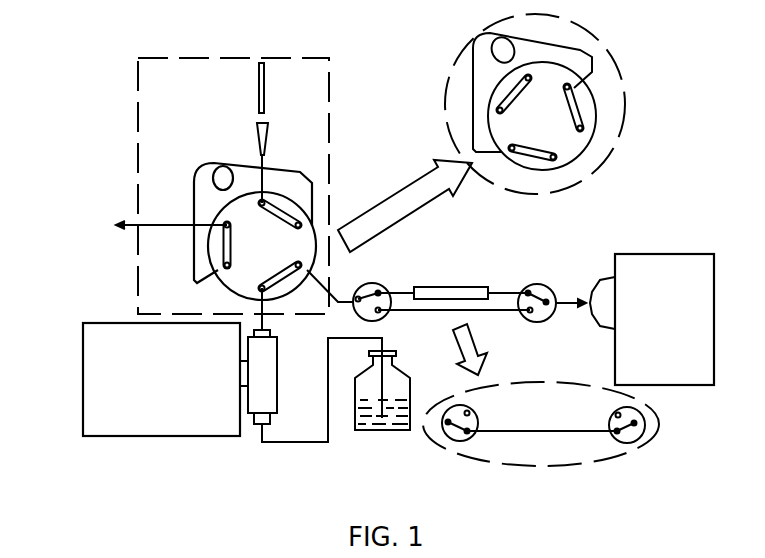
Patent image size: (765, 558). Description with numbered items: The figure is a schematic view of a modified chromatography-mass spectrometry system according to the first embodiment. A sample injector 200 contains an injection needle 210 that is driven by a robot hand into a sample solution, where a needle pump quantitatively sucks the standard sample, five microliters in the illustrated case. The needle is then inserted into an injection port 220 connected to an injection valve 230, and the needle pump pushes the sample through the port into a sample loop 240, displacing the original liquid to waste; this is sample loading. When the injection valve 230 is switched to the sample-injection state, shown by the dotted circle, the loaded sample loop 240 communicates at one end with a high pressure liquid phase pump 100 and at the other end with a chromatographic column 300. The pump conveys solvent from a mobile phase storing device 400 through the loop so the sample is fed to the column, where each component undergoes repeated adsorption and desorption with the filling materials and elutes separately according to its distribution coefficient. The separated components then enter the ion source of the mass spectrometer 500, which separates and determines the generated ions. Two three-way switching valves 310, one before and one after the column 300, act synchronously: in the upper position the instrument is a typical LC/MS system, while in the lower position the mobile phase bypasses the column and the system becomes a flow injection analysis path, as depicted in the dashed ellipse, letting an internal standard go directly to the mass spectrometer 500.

The high pressure liquid phase pump 100 is at (107, 377).
The sample injector 200 is at (147, 100).
The injection needle 210 is at (262, 80).
The injection port 220 is at (263, 140).
The injection valve 230 is at (312, 232).
The sample loop 240 is at (193, 182).
The chromatographic column 300 is at (462, 294).
The three-way switching valve 310 is at (546, 287).
The mobile phase storing device 400 is at (366, 397).
The mass spectrometer 500 is at (677, 290).